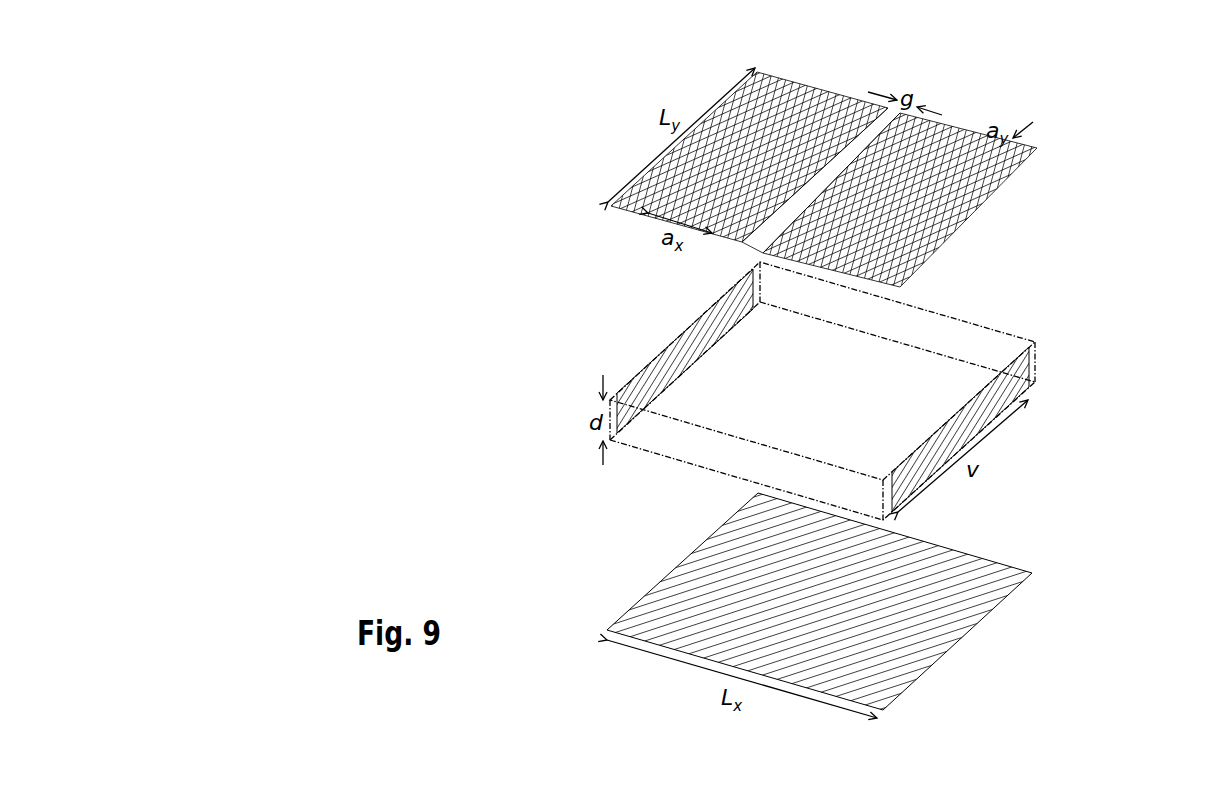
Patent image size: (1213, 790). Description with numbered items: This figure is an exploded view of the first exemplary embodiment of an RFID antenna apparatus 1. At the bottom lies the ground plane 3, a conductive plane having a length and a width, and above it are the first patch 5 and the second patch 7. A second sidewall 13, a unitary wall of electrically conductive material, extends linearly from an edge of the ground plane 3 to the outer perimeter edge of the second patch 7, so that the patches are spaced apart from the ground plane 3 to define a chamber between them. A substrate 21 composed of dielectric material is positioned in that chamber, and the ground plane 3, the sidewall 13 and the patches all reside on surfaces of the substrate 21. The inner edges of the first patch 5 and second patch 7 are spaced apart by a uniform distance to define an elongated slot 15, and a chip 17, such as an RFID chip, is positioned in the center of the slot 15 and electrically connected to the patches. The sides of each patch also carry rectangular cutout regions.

The antenna apparatus 1 is at (407, 242).
The ground plane 3 is at (650, 607).
The first patch 5 is at (650, 148).
The second patch 7 is at (980, 225).
The second sidewall 13 is at (653, 347).
The slot 15 is at (742, 249).
The chip 17 is at (833, 176).
The substrate 21 is at (752, 358).